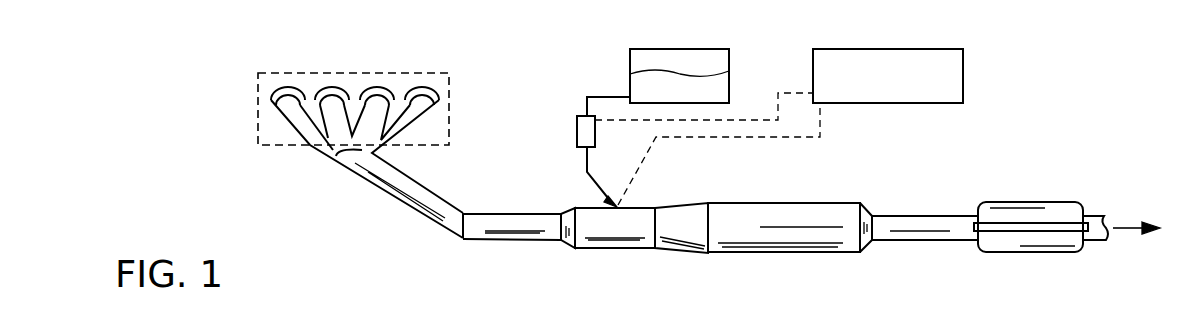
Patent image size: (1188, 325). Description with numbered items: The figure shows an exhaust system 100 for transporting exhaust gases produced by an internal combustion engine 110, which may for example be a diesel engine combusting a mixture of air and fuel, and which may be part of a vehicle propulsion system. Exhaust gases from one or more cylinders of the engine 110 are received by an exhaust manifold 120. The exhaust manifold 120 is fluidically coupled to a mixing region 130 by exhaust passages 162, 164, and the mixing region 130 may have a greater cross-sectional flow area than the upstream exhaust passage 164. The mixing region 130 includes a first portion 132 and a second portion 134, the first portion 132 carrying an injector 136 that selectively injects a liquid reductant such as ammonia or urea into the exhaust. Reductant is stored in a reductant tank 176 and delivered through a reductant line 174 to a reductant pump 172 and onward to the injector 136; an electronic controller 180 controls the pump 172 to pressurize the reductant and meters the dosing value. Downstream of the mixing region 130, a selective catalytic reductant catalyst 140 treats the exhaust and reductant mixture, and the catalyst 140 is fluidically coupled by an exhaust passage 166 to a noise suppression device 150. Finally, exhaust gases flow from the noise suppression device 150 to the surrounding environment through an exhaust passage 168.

The exhaust system 100 is at (338, 218).
The internal combustion engine 110 is at (449, 83).
The exhaust manifold 120 is at (317, 147).
The mixing region 130 is at (708, 257).
The first portion 132 is at (637, 205).
The second portion 134 is at (697, 205).
The injector 136 is at (616, 200).
The selective catalytic reductant catalyst 140 is at (797, 202).
The noise suppression device 150 is at (1030, 202).
The exhaust passage 162 is at (407, 207).
The exhaust passage 164 is at (505, 212).
The exhaust passage 166 is at (915, 215).
The exhaust passage 168 is at (1092, 213).
The reductant pump 172 is at (575, 128).
The reductant line 174 is at (624, 95).
The reductant tank 176 is at (729, 90).
The electronic controller 180 is at (963, 92).